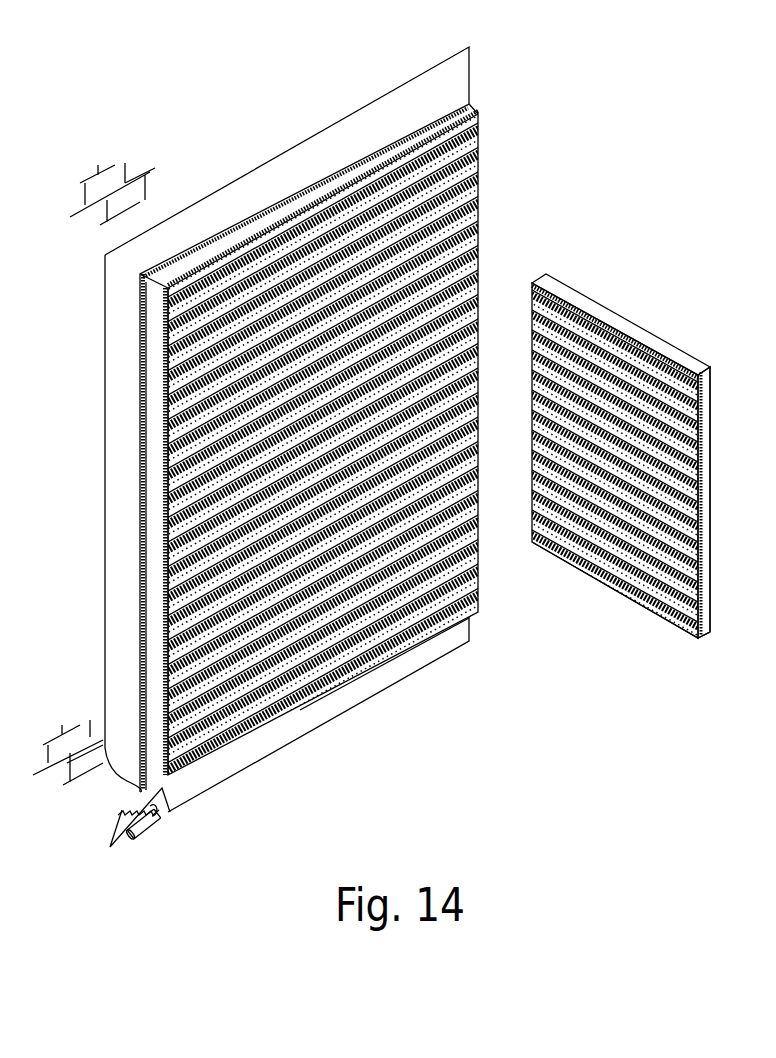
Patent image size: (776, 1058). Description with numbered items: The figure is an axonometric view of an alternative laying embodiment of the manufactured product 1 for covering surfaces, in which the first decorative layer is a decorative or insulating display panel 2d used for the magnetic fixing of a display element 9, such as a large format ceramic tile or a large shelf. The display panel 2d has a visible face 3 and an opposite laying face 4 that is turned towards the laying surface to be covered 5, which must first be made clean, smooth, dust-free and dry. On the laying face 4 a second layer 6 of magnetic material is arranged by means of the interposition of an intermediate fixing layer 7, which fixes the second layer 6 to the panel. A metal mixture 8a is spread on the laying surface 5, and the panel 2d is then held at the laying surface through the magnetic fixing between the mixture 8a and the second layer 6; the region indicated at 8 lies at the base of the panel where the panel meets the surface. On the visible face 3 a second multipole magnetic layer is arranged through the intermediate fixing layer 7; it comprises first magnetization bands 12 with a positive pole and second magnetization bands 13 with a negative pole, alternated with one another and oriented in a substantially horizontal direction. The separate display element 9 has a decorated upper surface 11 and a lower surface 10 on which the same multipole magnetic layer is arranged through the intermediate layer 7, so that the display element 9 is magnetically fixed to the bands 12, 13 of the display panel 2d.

The manufactured product 1 is at (485, 96).
The decorative or insulating panel 2d is at (375, 160).
The visible face 3 is at (165, 593).
The laying face 4 is at (280, 204).
The laying surface to be covered 5 is at (72, 275).
The second layer 6 is at (165, 526).
The intermediate fixing layer 7 is at (165, 368).
The sill 8 is at (289, 759).
The metal mixture 8a is at (405, 672).
The display element 9 is at (705, 522).
The lower surface 10 is at (588, 312).
The decorated upper surface 11 is at (712, 610).
The first magnetization bands 12 is at (478, 130).
The second magnetization bands 13 is at (478, 163).